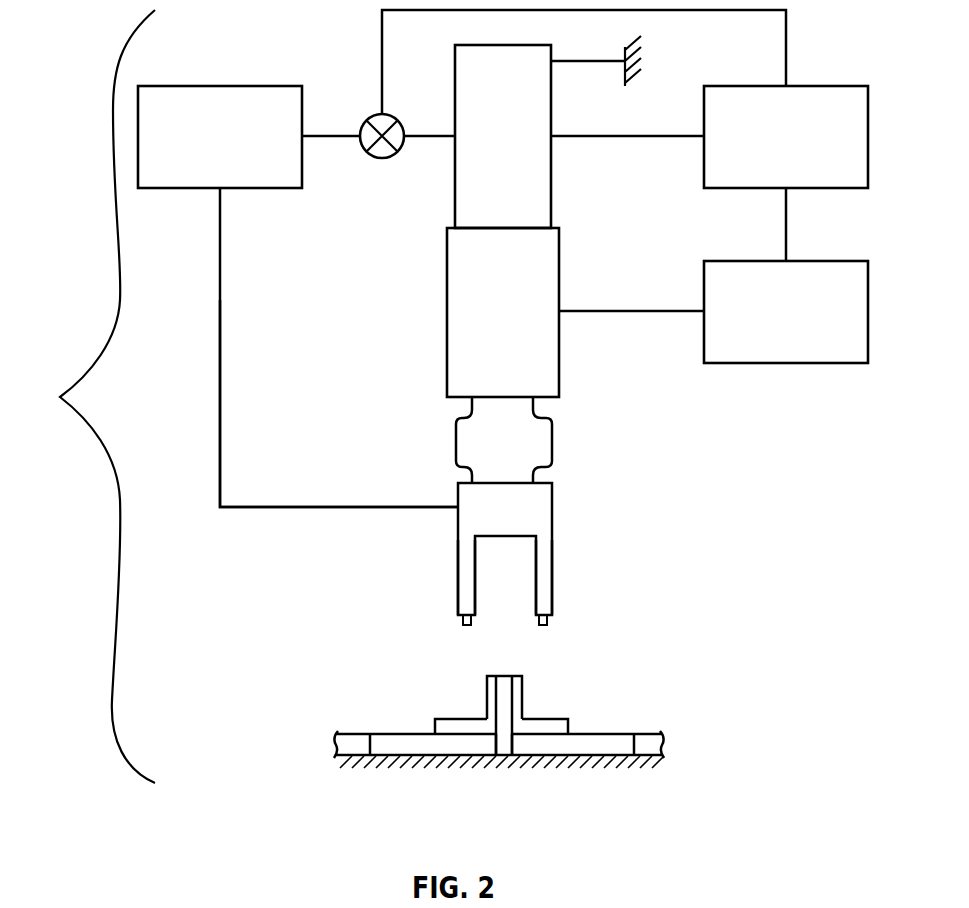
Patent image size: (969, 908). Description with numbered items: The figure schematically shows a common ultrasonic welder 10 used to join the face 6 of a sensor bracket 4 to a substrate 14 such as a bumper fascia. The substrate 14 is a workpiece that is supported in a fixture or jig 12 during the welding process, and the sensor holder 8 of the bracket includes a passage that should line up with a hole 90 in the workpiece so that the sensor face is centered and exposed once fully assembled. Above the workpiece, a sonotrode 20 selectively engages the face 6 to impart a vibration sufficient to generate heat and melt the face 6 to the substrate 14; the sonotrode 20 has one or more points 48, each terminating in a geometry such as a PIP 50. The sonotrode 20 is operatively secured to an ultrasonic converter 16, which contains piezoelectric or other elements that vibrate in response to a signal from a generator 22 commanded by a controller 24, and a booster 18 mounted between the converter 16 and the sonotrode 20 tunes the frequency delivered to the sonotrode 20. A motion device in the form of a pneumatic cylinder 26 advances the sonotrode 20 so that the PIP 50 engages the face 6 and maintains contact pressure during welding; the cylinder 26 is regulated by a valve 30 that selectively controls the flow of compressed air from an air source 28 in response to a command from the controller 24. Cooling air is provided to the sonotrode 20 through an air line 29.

The welder 10 is at (90, 396).
The air source 28 is at (194, 85).
The valve 30 is at (364, 118).
The pneumatic cylinder 26 is at (455, 201).
The controller 24 is at (760, 85).
The generator 22 is at (760, 260).
The ultrasonic converter 16 is at (447, 336).
The booster 18 is at (456, 445).
The sonotrode 20 is at (540, 510).
The points 48 is at (466, 573).
The PIP 50 is at (463, 622).
The air line 29 is at (262, 506).
The fixture or jig 12 is at (650, 762).
The substrate 14 is at (366, 740).
The face 6 is at (530, 737).
The sensor holder 8 is at (487, 697).
The sensor bracket 4 is at (530, 678).
The hole 90 is at (503, 742).